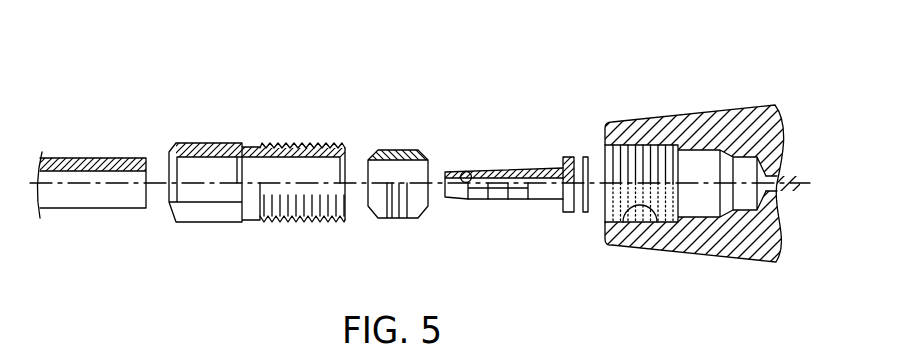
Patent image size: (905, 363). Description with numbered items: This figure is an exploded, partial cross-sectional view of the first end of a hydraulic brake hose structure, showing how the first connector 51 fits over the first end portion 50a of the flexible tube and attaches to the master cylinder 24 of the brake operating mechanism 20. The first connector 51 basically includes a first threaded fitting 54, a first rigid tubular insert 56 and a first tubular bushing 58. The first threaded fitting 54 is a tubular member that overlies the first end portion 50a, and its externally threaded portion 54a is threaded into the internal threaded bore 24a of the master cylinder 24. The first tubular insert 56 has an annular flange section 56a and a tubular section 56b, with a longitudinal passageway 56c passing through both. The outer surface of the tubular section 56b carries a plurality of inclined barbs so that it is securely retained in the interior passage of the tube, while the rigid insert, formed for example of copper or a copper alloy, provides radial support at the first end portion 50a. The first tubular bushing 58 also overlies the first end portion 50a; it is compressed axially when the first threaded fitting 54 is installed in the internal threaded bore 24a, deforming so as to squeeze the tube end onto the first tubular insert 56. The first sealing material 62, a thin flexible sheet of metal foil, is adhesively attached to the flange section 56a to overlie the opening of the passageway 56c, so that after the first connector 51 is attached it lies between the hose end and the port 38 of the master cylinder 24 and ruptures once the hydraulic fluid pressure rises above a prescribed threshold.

The brake operating mechanism 20 is at (708, 177).
The master cylinder 24 is at (745, 240).
The internal threaded bore 24a is at (654, 210).
The port 38 is at (773, 187).
The first end portion 50a is at (91, 157).
The first connector 51 is at (354, 75).
The first threaded fitting 54 is at (229, 117).
The externally threaded portion 54a is at (300, 143).
The first tubular insert 56 is at (508, 186).
The flange section 56a is at (568, 214).
The tubular section 56b is at (477, 200).
The longitudinal passageway 56c is at (457, 172).
The first tubular bushing 58 is at (418, 138).
The first sealing material 62 is at (586, 213).